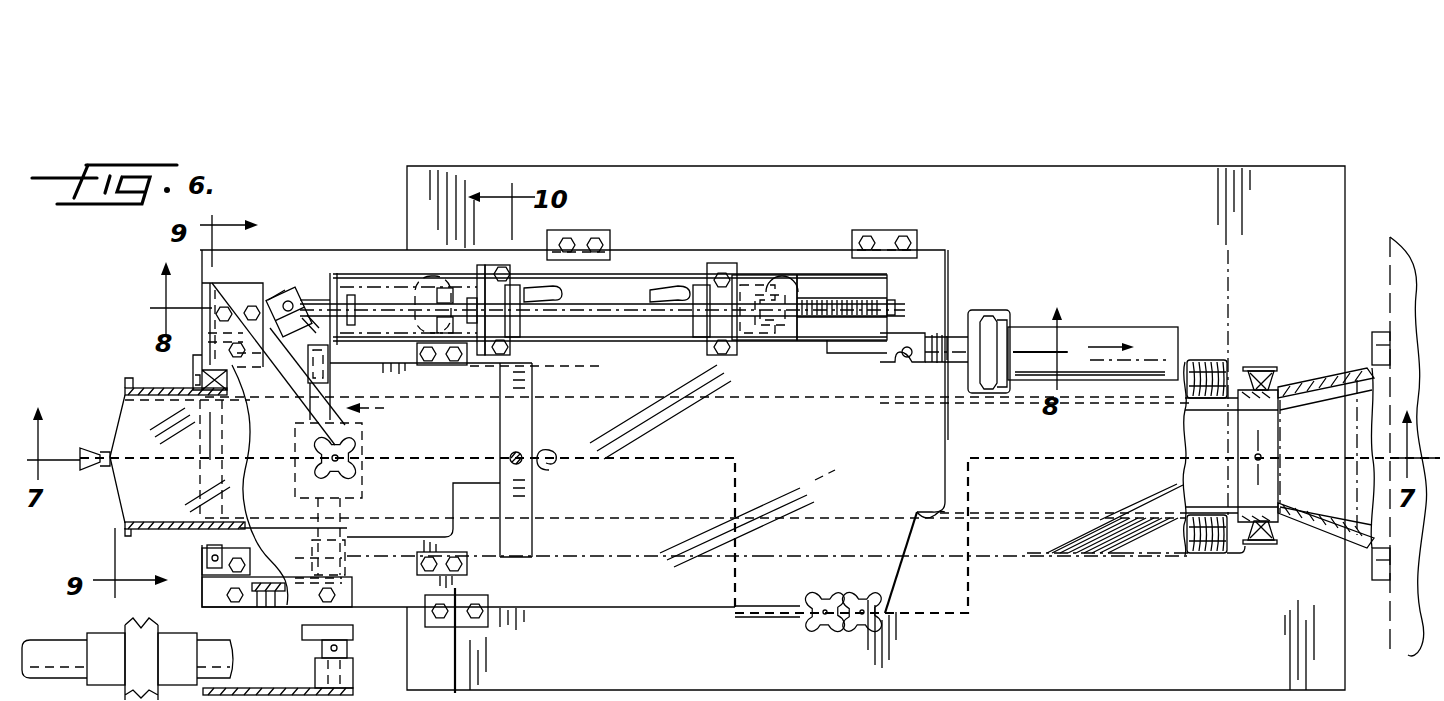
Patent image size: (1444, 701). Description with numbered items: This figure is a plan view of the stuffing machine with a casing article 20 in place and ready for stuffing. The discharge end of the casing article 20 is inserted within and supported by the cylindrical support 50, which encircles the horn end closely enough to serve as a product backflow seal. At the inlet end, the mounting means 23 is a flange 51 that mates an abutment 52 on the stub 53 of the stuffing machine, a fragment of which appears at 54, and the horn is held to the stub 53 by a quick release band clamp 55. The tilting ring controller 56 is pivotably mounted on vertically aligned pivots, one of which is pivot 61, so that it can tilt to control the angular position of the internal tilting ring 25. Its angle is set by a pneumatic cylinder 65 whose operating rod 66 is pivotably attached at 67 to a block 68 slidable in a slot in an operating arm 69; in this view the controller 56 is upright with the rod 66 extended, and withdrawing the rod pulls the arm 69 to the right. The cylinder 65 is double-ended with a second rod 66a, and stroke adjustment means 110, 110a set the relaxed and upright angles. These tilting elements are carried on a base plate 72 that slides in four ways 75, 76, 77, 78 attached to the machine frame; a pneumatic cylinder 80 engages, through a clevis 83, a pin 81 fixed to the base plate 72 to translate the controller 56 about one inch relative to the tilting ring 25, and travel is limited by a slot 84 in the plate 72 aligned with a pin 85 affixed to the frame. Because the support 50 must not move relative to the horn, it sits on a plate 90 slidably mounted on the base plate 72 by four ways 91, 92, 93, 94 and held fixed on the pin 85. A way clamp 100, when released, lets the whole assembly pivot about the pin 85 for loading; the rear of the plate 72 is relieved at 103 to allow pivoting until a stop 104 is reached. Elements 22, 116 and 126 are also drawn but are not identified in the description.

The casing article 20 is at (1050, 558).
The packing 22 is at (1206, 556).
The mounting means 23 is at (1246, 558).
The tilting ring 25 is at (384, 415).
The cylindrical support means 50 is at (140, 386).
The flange 51 is at (1240, 389).
The abutment 52 is at (1258, 520).
The stub 53 is at (1312, 382).
The stuffing machine fragment 54 is at (1390, 307).
The quick release band clamp 55 is at (1262, 367).
The tilting ring controller 56 is at (320, 426).
The pivot 61 is at (360, 450).
The pneumatic cylinder 65 is at (628, 343).
The operating rod 66 is at (387, 297).
The operating rod 66a is at (766, 276).
The pivot attachment 67 is at (288, 300).
The block 68 is at (282, 296).
The operating arm 69 is at (308, 340).
The base plate 72 is at (950, 273).
The way 75 is at (578, 230).
The way 76 is at (873, 230).
The way 77 is at (488, 628).
The way 78 is at (836, 632).
The pneumatic cylinder 80 is at (1130, 327).
The pin 81 is at (907, 358).
The clevis 83 is at (930, 335).
The slot 84 is at (546, 466).
The pin 85 is at (524, 453).
The plate 90 is at (527, 537).
The way 91 is at (222, 366).
The way 92 is at (440, 366).
The way 93 is at (242, 546).
The way 94 is at (437, 551).
The way clamp 100 is at (818, 592).
The relief 103 is at (904, 560).
The stop 104 is at (945, 514).
The stroke adjustment means 110 is at (430, 270).
The stroke adjustment means 110a is at (784, 344).
The handle 116 is at (674, 288).
The handle 126 is at (546, 300).